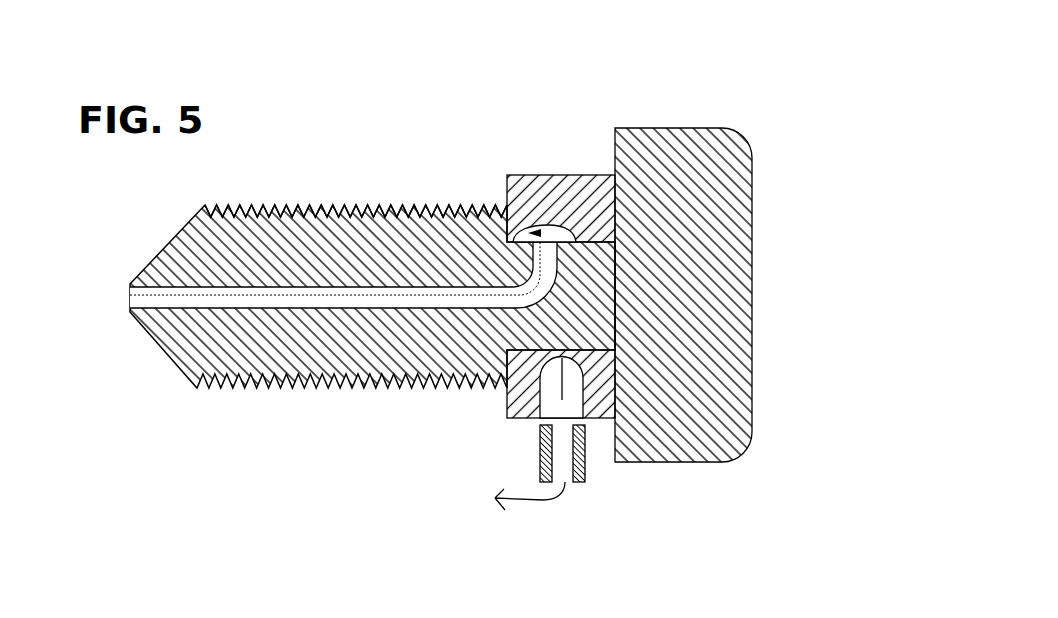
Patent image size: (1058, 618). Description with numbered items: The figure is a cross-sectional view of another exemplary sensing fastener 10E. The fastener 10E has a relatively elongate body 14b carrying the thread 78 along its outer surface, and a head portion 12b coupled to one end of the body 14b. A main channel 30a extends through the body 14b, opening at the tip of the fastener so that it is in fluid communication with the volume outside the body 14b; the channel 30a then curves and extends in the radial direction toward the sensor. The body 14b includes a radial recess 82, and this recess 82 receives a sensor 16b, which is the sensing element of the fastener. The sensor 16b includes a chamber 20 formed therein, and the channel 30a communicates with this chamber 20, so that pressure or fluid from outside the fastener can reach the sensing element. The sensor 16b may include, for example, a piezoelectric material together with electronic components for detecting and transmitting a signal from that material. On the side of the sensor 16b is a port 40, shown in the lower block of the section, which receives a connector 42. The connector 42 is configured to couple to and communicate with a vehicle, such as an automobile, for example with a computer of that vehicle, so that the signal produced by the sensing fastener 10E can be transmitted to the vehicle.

The sensing fastener 10E is at (713, 62).
The head portion 12b is at (736, 130).
The body 14b is at (180, 232).
The sensor 16b is at (555, 173).
The chamber 20 is at (512, 233).
The main channel 30a is at (147, 296).
The port 40 is at (545, 400).
The connector 42 is at (544, 508).
The thread 78 is at (298, 205).
The radial recess 82 is at (525, 326).